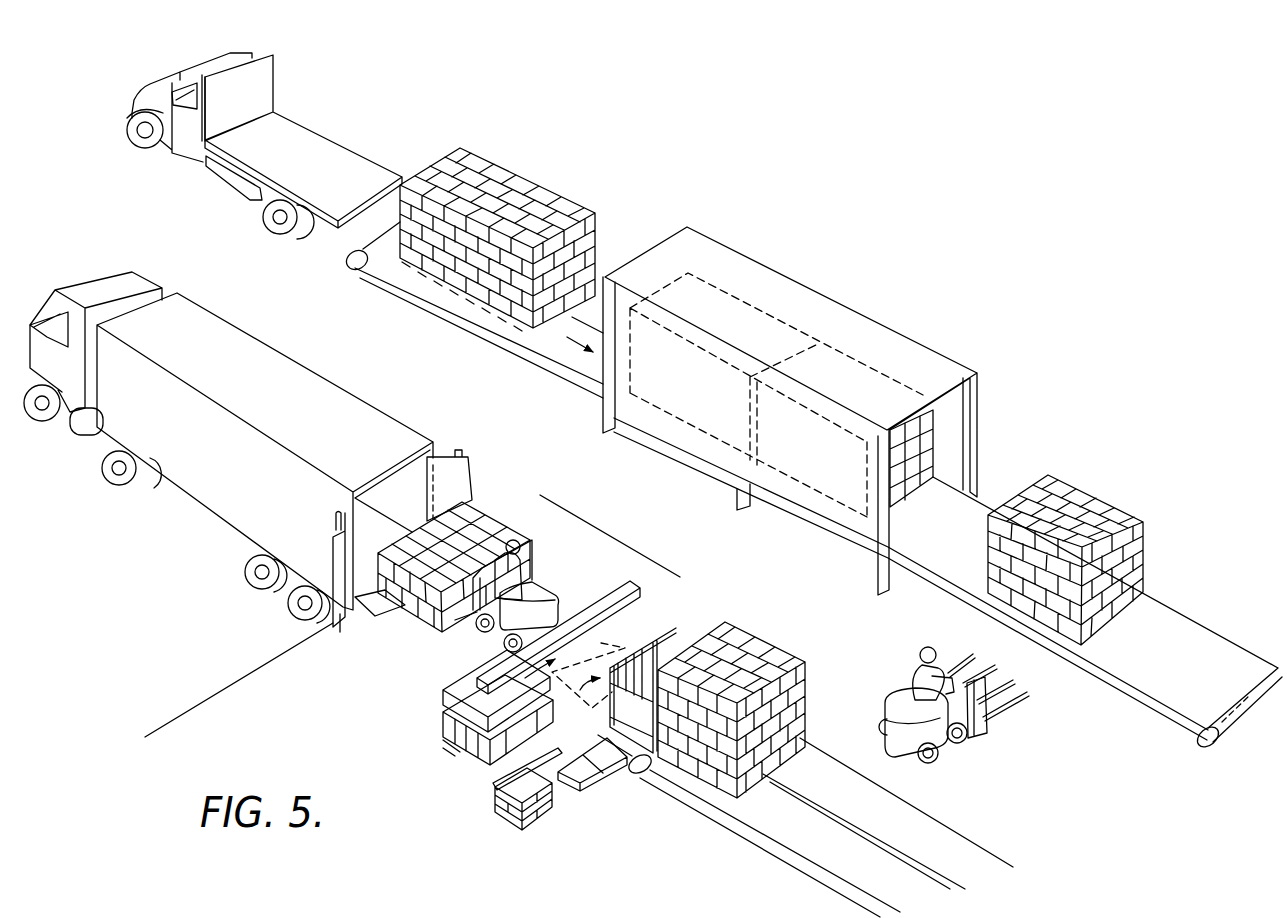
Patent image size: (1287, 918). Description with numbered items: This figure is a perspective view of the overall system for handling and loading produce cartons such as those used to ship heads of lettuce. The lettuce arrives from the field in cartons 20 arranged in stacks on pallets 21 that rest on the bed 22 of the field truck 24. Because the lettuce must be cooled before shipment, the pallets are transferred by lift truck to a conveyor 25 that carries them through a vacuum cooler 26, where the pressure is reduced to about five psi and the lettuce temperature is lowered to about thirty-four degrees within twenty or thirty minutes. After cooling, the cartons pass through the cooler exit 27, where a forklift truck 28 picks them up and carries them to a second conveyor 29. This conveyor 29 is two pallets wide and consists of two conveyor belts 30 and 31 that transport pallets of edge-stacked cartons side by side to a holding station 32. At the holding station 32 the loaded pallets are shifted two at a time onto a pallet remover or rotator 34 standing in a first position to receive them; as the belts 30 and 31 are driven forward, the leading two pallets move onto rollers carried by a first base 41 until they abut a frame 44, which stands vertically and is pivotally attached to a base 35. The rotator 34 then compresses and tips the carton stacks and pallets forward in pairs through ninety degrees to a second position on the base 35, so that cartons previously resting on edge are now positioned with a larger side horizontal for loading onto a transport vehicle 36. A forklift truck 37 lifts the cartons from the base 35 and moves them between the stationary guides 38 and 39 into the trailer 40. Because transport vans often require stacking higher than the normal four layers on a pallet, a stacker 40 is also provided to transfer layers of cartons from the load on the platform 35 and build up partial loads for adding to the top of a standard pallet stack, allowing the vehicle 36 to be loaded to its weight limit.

The carton 20 is at (483, 155).
The pallet 21 is at (440, 284).
The bed 22 is at (345, 155).
The field truck 24 is at (264, 146).
The conveyor 25 is at (947, 568).
The vacuum cooler 26 is at (814, 411).
The cooler exit 27 is at (962, 416).
The forklift truck 28 is at (907, 703).
The second conveyor 29 is at (925, 842).
The conveyor belt 30 is at (883, 810).
The conveyor belt 31 is at (807, 828).
The holding station 32 is at (768, 636).
The pallet remover or rotator 34 is at (663, 611).
The base 35 is at (601, 643).
The transport vehicle 36 is at (228, 504).
The forklift truck 37 is at (533, 592).
The stationary guide 38 is at (346, 623).
The stationary guide 39 is at (474, 466).
The stacker 40 is at (420, 472).
The first base 41 is at (617, 731).
The frame 44 is at (673, 624).